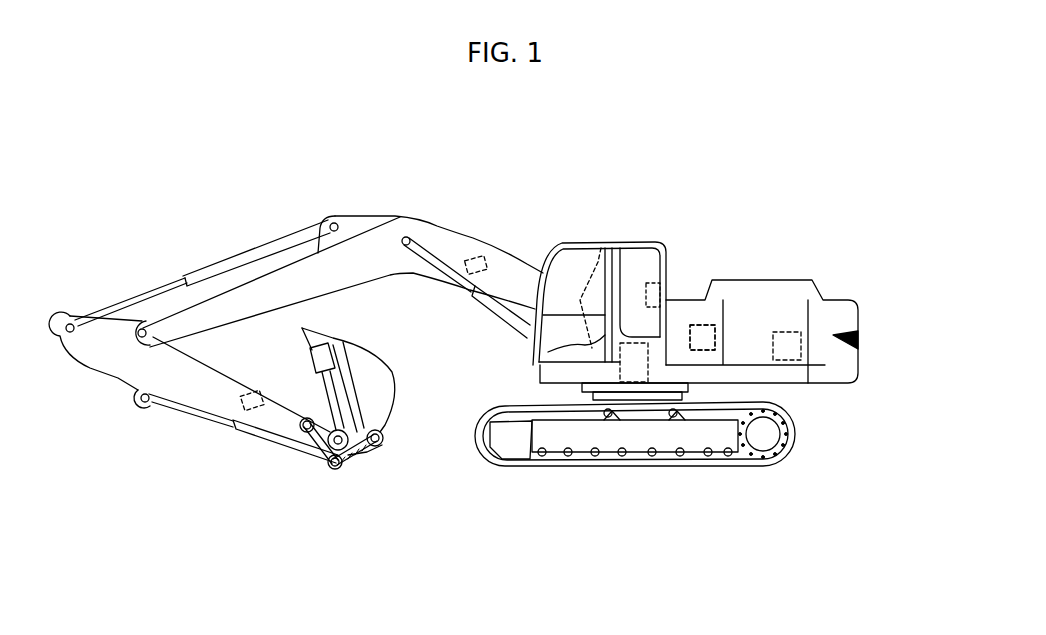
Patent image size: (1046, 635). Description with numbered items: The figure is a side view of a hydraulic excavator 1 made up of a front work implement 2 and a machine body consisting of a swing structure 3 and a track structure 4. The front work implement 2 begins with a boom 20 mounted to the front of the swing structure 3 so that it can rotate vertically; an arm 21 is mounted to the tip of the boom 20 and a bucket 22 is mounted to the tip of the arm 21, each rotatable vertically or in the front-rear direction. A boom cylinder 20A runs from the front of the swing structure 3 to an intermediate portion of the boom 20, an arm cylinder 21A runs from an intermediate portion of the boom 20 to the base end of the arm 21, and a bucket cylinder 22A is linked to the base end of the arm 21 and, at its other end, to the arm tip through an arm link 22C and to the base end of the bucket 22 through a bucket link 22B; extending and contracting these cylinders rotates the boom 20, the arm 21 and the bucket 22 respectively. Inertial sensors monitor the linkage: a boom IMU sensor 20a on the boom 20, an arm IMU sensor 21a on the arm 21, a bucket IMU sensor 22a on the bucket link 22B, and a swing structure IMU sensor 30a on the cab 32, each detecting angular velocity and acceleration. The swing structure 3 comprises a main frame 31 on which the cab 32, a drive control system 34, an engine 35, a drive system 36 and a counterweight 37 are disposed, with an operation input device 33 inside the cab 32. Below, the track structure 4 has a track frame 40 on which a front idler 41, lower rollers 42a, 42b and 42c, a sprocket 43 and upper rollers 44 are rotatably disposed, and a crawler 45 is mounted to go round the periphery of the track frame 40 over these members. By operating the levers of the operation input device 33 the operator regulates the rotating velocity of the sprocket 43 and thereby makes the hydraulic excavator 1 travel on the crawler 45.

The hydraulic excavator 1 is at (860, 533).
The front work implement 2 is at (63, 181).
The swing structure 3 is at (722, 292).
The track structure 4 is at (703, 469).
The boom 20 is at (339, 264).
The boom cylinder 20A is at (466, 288).
The boom IMU sensor 20a is at (518, 243).
The arm 21 is at (194, 381).
The arm cylinder 21A is at (202, 272).
The arm IMU sensor 21a is at (266, 377).
The bucket 22 is at (378, 391).
The bucket cylinder 22A is at (231, 428).
The bucket link 22B is at (357, 478).
The arm link 22C is at (310, 459).
The bucket IMU sensor 22a is at (394, 465).
The swing structure IMU sensor 30a is at (690, 268).
The main frame 31 is at (587, 371).
The cab 32 is at (626, 274).
The operation input device 33 is at (594, 277).
The drive control system 34 is at (731, 288).
The engine 35 is at (758, 293).
The drive system 36 is at (827, 311).
The counterweight 37 is at (895, 352).
The track frame 40 is at (636, 473).
The front idler 41 is at (487, 459).
The lower roller 42a is at (528, 481).
The lower roller 42b is at (656, 477).
The lower roller 42c is at (752, 478).
The sprocket 43 is at (803, 450).
The upper rollers 44 is at (571, 483).
The crawler 45 is at (681, 434).